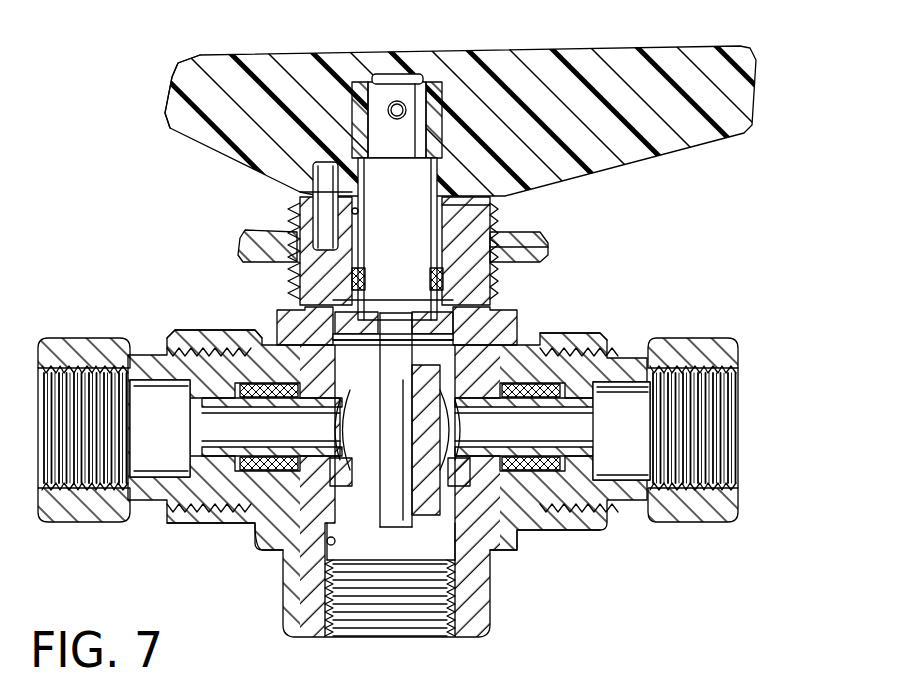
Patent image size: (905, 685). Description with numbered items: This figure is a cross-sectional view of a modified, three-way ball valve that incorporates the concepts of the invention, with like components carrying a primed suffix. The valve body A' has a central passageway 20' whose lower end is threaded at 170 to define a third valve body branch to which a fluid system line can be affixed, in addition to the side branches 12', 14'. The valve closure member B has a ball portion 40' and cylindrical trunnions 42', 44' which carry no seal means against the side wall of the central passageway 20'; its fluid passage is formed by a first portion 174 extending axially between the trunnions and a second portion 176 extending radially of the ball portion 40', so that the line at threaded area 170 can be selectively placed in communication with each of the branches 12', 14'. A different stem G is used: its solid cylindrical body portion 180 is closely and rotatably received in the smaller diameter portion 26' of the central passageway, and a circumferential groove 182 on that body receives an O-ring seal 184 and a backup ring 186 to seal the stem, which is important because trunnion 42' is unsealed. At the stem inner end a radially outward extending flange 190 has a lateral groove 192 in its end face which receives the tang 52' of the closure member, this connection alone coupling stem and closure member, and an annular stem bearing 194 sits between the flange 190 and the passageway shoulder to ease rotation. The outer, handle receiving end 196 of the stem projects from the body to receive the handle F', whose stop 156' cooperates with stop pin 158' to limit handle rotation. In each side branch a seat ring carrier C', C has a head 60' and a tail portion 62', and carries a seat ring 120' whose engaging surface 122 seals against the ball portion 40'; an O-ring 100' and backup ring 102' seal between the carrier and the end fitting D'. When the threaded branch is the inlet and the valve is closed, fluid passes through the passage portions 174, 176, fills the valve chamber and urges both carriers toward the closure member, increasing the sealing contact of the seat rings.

The handle receiving end 196 is at (435, 72).
The handle F' is at (155, 119).
The stem G is at (402, 201).
The solid cylindrical body portion 180 is at (422, 214).
The handle stop 156' is at (295, 187).
The stop pin 158' is at (287, 191).
The smaller diameter portion 26' is at (290, 218).
The circumferential groove 182 is at (382, 273).
The O-ring seal 184 is at (487, 283).
The backup ring 186 is at (490, 262).
The central passageway 20' is at (389, 483).
The valve body branch 12' is at (196, 305).
The valve body branch 14' is at (606, 311).
The valve body A' is at (219, 553).
The trunnion 44' is at (528, 560).
The flange 190 is at (480, 305).
The annular stem bearing 194 is at (337, 297).
The tang 52' is at (368, 324).
The trunnion 42' is at (368, 343).
The lateral groove 192 is at (453, 337).
The ball portion 40' is at (416, 420).
The seat ring engaging surface 122 is at (409, 377).
The fluid passage first portion 174 is at (393, 491).
The head 60' is at (415, 497).
The fluid passage second portion 176 is at (362, 450).
The seat ring carrier C' is at (271, 429).
The seat ring carrier C is at (524, 427).
The O-ring seal 100' is at (384, 348).
The backup ring 102' is at (421, 447).
The tail portion 62' is at (585, 431).
The end fitting D' is at (394, 398).
The threaded area 170 is at (330, 592).
The seat ring 120' is at (391, 541).
The closure member B is at (421, 550).